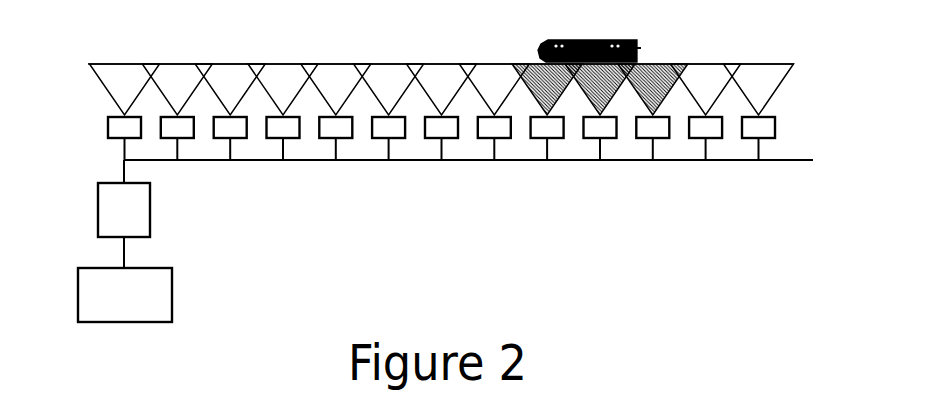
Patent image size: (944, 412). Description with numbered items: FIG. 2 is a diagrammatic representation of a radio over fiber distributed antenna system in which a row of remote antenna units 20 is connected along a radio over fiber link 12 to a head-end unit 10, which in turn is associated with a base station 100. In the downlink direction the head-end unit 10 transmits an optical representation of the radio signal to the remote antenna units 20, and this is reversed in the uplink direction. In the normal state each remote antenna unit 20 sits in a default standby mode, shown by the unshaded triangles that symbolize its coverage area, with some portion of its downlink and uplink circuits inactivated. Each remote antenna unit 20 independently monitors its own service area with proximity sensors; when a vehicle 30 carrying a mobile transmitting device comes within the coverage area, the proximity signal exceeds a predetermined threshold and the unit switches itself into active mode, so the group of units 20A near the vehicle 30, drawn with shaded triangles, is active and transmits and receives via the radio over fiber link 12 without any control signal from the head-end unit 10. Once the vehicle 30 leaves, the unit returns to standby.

The head-end unit 10 is at (138, 224).
The radio over fiber link 12 is at (124, 176).
The remote antenna unit 20 is at (442, 153).
The activated sensor units 20A is at (677, 165).
The vehicle 30 is at (641, 50).
The base station 100 is at (146, 310).